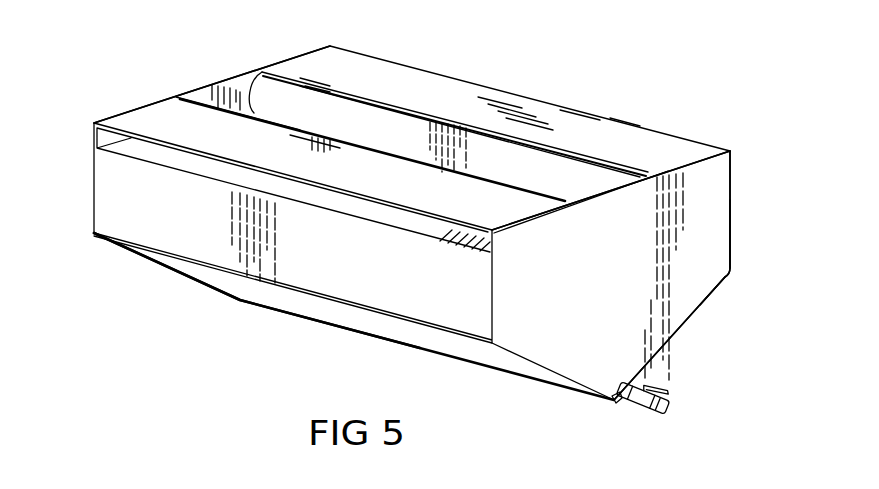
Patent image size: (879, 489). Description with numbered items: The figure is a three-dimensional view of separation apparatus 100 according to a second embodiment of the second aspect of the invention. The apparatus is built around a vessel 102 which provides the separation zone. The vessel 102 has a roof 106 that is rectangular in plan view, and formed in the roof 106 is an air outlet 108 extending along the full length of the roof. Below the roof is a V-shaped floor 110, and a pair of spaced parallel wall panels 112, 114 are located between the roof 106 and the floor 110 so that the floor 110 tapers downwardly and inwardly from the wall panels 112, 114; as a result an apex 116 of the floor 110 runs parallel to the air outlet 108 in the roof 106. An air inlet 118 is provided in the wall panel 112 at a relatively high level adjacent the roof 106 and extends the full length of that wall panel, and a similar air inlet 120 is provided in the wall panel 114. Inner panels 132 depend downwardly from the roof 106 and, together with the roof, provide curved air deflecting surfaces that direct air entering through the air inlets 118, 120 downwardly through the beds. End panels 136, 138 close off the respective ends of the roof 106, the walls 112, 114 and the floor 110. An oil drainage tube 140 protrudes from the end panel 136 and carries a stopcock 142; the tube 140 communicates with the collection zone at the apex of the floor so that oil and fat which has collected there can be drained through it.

The separation apparatus 100 is at (427, 243).
The vessel 102 is at (752, 274).
The roof 106 is at (467, 107).
The air outlet 108 is at (228, 85).
The V-shaped floor 110 is at (348, 312).
The wall panel 112 is at (93, 212).
The wall panel 114 is at (731, 225).
The apex 116 is at (458, 356).
The air inlet 118 is at (146, 164).
The air inlet 120 is at (754, 200).
The inner panels 132 is at (293, 130).
The end panel 136 is at (684, 298).
The end panel 138 is at (161, 99).
The oil drainage tube 140 is at (606, 400).
The stopcock 142 is at (638, 410).